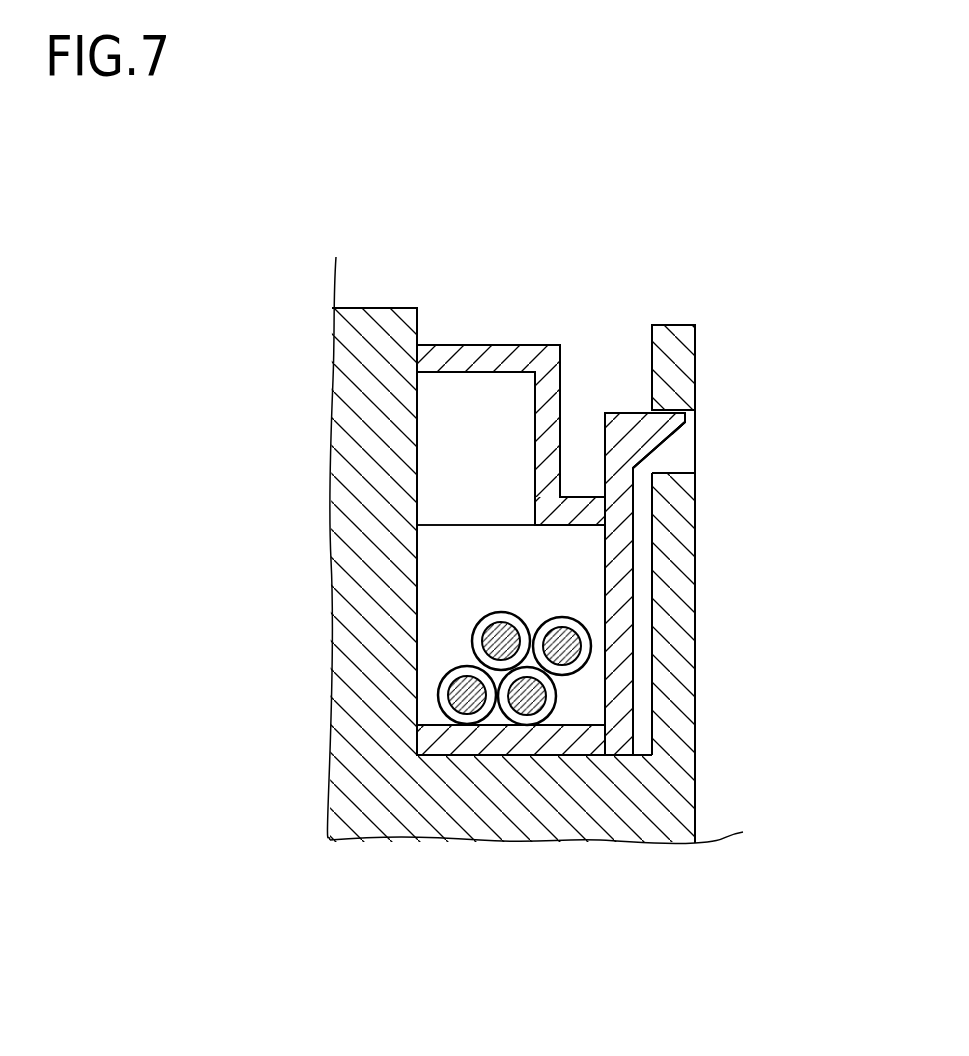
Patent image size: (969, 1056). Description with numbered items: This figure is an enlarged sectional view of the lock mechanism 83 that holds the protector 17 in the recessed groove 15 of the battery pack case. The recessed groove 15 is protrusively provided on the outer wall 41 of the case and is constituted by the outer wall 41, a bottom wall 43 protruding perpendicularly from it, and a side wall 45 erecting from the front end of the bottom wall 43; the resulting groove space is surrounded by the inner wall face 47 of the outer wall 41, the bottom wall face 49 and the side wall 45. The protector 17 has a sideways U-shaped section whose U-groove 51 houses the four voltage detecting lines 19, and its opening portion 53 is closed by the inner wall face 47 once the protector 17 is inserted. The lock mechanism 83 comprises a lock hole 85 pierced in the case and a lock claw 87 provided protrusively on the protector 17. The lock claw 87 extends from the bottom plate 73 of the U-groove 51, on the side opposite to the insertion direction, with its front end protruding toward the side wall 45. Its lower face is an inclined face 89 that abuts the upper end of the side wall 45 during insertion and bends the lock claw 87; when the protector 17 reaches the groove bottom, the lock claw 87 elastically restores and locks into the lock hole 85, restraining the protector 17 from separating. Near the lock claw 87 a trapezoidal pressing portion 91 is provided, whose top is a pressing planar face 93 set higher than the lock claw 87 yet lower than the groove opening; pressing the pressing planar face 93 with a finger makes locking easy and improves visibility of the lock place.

The recessed groove 15 is at (593, 372).
The protector 17 is at (632, 561).
The voltage detecting lines 19 is at (553, 619).
The outer wall 41 is at (418, 332).
The bottom wall 43 is at (533, 773).
The side wall 45 is at (690, 325).
The inner wall face 47 is at (448, 478).
The bottom wall face 49 is at (583, 747).
The U-groove 51 is at (605, 558).
The opening portion 53 is at (421, 374).
The bottom plate 73 is at (618, 623).
The lock mechanism 83 is at (810, 345).
The lock hole 85 is at (686, 419).
The lock claw 87 is at (667, 411).
The inclined face 89 is at (660, 447).
The pressing portion 91 is at (538, 344).
The pressing planar face 93 is at (505, 345).